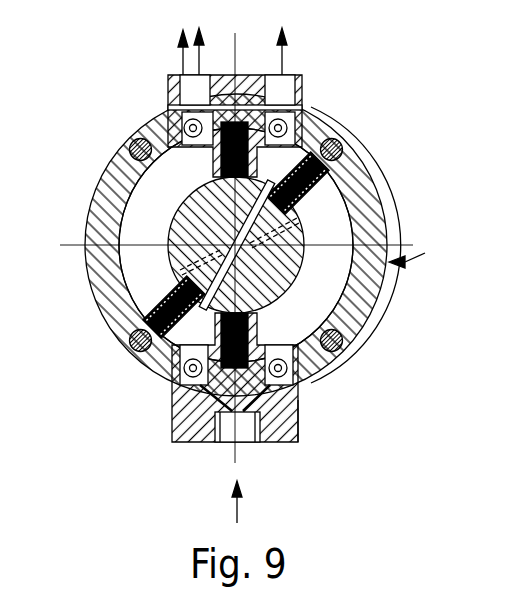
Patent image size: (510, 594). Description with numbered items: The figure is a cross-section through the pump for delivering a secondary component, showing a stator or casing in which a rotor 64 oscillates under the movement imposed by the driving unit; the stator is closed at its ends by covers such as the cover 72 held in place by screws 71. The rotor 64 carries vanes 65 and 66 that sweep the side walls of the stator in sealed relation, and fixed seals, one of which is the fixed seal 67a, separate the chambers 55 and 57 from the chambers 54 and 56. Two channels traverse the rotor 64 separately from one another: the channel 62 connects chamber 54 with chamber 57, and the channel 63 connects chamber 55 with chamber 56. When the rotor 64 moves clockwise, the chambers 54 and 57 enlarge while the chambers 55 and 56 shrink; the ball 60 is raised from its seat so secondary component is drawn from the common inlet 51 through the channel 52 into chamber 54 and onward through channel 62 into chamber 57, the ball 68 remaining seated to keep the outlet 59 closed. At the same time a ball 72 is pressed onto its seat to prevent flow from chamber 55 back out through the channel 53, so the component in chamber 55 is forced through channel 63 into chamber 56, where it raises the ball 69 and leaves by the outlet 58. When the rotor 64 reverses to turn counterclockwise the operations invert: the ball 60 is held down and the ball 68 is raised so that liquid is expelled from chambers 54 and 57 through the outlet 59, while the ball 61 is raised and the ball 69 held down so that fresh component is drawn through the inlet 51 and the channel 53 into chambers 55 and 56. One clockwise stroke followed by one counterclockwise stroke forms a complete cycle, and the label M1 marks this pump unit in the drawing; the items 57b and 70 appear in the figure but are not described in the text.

The common inlet 51 is at (245, 430).
The channel 52 is at (173, 433).
The channel 53 is at (297, 418).
The chamber 54 is at (165, 350).
The chamber 55 is at (372, 324).
The chamber 56 is at (97, 188).
The chamber 57 is at (268, 163).
The lower pin 57b is at (256, 322).
The outlet 58 is at (193, 92).
The outlet 59 is at (280, 90).
The ball 60 is at (180, 360).
The ball 61 is at (295, 380).
The channel 62 is at (272, 290).
The channel 63 is at (300, 258).
The rotor 64 is at (295, 222).
The vane 65 is at (357, 205).
The vane 66 is at (97, 300).
The fixed seal 67a is at (220, 163).
The ball 68 is at (302, 116).
The ball 69 is at (160, 114).
The upper bearing block 70 is at (168, 108).
The screw 71 is at (358, 161).
The cover 72 is at (303, 381).
The moment M1 is at (429, 251).